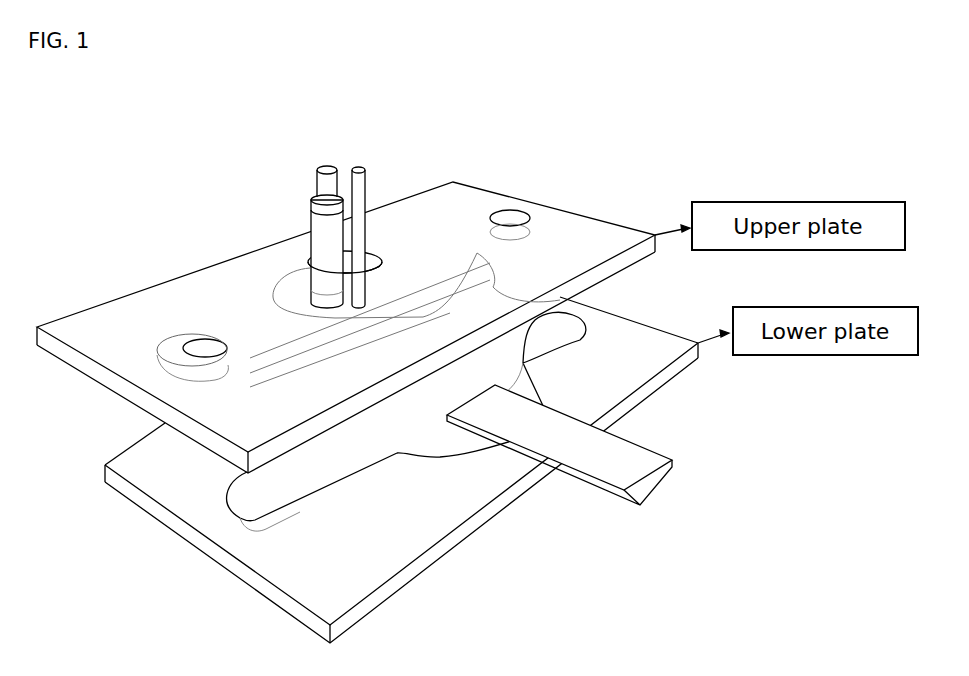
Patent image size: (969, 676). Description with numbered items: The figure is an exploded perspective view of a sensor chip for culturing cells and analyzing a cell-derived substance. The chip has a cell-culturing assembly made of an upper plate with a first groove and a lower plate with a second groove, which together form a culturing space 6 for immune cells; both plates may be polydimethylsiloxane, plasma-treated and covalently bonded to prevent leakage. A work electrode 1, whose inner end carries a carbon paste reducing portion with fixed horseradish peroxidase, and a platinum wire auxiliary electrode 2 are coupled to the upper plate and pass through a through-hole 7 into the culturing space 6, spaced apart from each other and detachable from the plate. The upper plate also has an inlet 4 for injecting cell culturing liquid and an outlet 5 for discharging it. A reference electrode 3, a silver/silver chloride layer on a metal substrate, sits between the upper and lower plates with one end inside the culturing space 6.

The work electrode 1 is at (313, 175).
The auxiliary electrode 2 is at (370, 170).
The reference electrode 3 is at (670, 467).
The inlet 4 is at (518, 220).
The outlet 5 is at (205, 350).
The culturing space 6 is at (433, 447).
The through-hole 7 is at (318, 265).